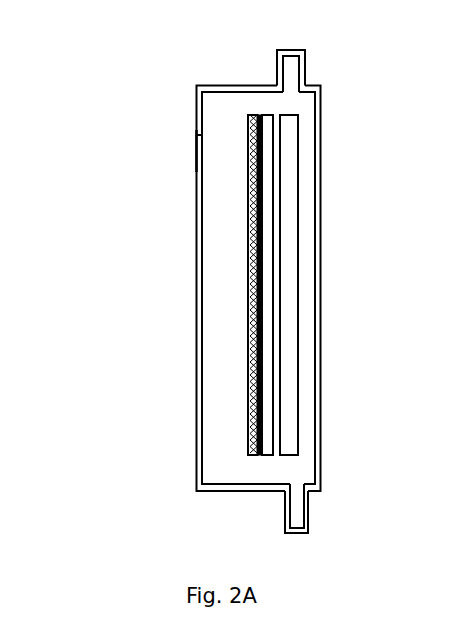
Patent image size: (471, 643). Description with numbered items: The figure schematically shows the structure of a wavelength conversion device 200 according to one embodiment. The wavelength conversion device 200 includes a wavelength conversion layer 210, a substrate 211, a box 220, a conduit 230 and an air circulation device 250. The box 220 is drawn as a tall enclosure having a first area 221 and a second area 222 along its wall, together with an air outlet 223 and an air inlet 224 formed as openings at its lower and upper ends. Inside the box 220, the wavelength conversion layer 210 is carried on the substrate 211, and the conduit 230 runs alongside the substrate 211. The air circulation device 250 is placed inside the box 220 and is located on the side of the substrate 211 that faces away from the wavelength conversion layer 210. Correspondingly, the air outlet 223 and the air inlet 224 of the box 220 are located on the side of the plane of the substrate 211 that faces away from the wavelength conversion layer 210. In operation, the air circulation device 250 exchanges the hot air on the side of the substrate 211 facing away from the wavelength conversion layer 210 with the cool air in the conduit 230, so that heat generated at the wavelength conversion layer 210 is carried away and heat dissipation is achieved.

The wavelength conversion device 200 is at (104, 101).
The wavelength conversion layer 210 is at (254, 117).
The substrate 211 is at (269, 122).
The box 220 is at (197, 418).
The first area 221 is at (198, 167).
The second area 222 is at (200, 151).
The air outlet 223 is at (298, 487).
The air inlet 224 is at (292, 88).
The conduit 230 is at (297, 69).
The air circulation device 250 is at (286, 445).